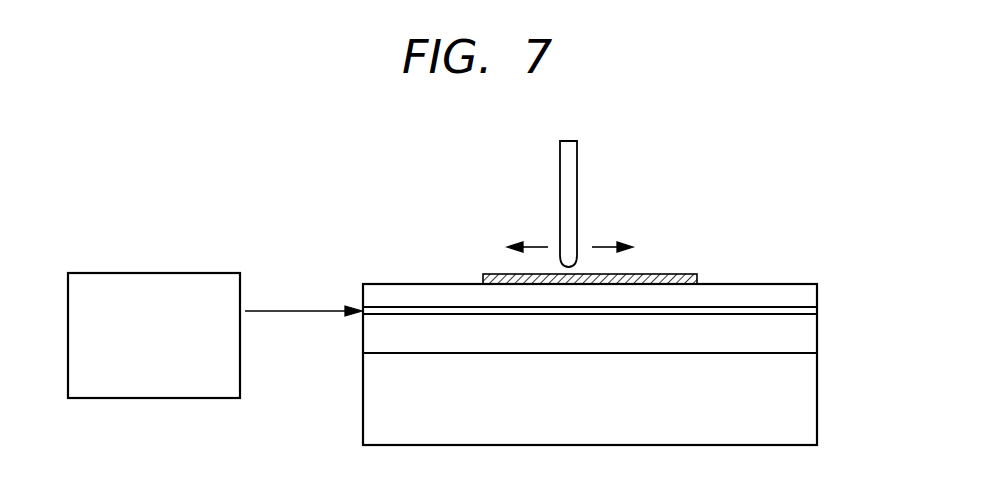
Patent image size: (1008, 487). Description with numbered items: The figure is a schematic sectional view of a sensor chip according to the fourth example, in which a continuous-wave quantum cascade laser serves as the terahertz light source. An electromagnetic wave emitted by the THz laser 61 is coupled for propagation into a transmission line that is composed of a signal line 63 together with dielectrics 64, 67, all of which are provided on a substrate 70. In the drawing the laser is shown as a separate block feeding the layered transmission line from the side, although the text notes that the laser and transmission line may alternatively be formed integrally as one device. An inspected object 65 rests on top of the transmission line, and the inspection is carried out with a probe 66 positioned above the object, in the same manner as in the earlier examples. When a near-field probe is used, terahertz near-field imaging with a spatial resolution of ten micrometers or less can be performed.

The THz laser 61 is at (174, 272).
The signal line 63 is at (817, 308).
The dielectric 64 is at (777, 288).
The inspected object 65 is at (677, 273).
The probe 66 is at (577, 162).
The dielectric 67 is at (803, 334).
The substrate 70 is at (802, 408).